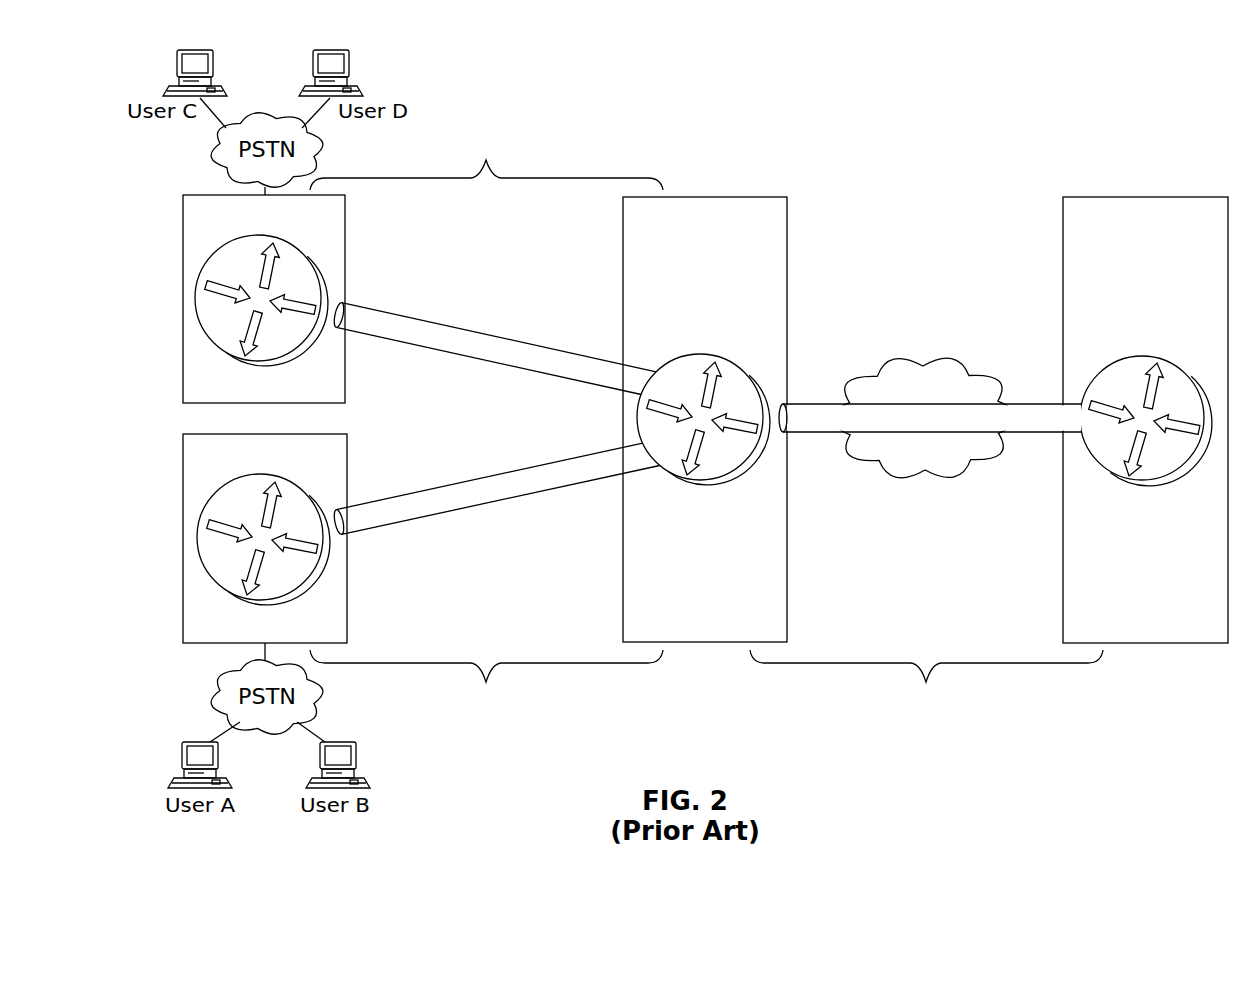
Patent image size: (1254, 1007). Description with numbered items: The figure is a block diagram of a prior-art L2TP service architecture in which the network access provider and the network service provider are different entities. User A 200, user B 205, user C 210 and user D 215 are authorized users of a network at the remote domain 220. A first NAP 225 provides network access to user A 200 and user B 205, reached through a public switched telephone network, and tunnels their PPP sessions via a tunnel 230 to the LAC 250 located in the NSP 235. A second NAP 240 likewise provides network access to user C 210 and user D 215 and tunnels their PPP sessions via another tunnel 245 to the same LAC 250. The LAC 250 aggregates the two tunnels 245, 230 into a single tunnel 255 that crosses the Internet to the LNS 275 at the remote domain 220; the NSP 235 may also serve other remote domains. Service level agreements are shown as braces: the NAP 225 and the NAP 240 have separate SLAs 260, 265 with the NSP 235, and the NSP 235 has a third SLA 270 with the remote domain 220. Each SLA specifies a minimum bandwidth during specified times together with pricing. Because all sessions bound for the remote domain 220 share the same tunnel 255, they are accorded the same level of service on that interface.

The user A 200 is at (218, 755).
The user B 205 is at (356, 755).
The user C 210 is at (213, 70).
The user D 215 is at (349, 70).
The remote domain 220 is at (1063, 234).
The NAP 225 is at (183, 471).
The tunnel 230 is at (477, 480).
The NSP 235 is at (623, 234).
The NAP 240 is at (183, 233).
The tunnel 245 is at (462, 332).
The LAC 250 is at (703, 353).
The single tunnel 255 is at (1037, 440).
The SLA 260 is at (486, 732).
The SLA 265 is at (484, 114).
The third SLA 270 is at (925, 732).
The LNS 275 is at (1144, 354).